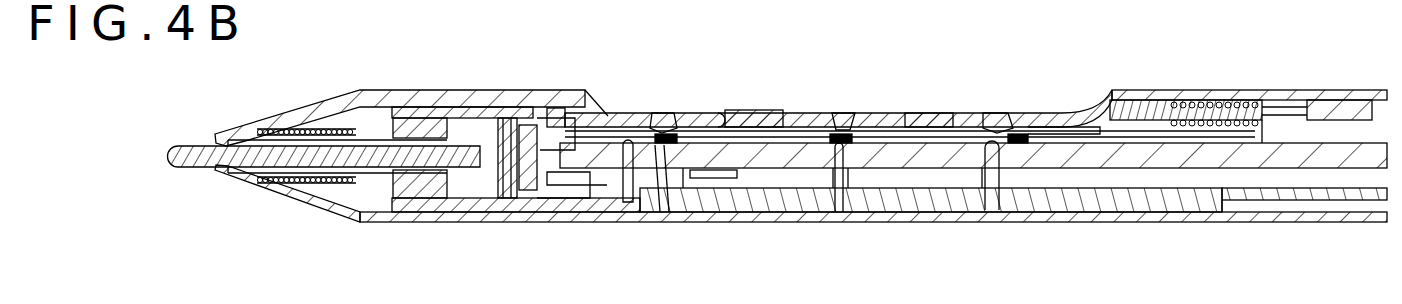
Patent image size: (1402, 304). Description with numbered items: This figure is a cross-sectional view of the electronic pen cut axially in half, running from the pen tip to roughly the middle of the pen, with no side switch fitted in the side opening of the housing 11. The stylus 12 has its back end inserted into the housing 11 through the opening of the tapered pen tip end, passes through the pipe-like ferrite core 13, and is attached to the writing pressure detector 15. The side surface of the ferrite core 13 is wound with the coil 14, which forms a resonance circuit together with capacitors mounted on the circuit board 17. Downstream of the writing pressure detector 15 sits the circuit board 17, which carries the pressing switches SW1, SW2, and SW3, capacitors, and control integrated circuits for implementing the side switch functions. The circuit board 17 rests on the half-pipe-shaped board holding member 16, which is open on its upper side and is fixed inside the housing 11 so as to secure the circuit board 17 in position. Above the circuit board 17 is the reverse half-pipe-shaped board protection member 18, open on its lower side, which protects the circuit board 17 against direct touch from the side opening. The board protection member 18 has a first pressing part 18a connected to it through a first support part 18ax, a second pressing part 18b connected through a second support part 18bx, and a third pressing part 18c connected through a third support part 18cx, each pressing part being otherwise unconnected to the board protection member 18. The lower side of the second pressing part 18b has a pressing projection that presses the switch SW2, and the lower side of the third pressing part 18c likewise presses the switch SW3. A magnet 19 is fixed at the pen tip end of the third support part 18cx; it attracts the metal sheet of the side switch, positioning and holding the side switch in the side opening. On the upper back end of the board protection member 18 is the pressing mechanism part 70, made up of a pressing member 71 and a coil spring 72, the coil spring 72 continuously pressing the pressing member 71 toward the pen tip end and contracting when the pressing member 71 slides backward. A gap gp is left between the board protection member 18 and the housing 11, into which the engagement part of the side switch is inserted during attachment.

The housing 11 is at (418, 95).
The stylus 12 is at (185, 152).
The ferrite core 13 is at (254, 130).
The coil 14 is at (305, 130).
The writing pressure detector 15 is at (477, 163).
The board holding member 16 is at (748, 203).
The circuit board 17 is at (910, 160).
The board protection member 18 is at (606, 112).
The first pressing part 18a is at (697, 113).
The first support part 18ax is at (648, 113).
The second pressing part 18b is at (848, 113).
The second support part 18bx is at (798, 113).
The third pressing part 18c is at (1028, 115).
The third support part 18cx is at (985, 113).
The magnet 19 is at (927, 115).
The pressing mechanism part 70 is at (1186, 69).
The pressing member 71 is at (1150, 92).
The coil spring 72 is at (1214, 89).
The pressing switch SW1 is at (663, 147).
The pressing switch SW2 is at (843, 153).
The pressing switch SW3 is at (1020, 143).
The gap gp is at (598, 104).